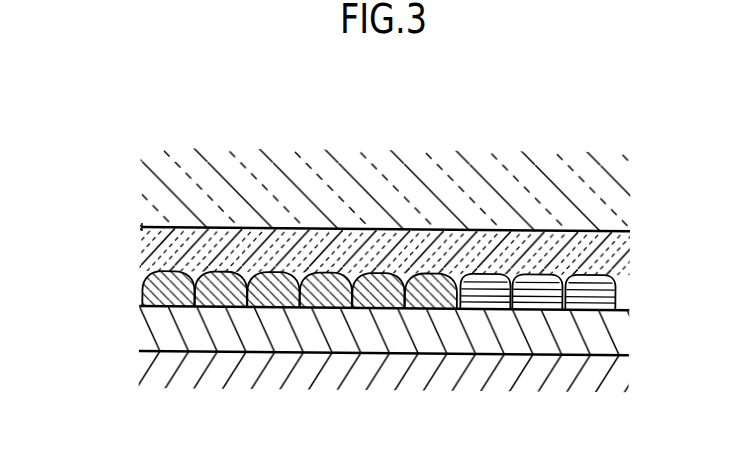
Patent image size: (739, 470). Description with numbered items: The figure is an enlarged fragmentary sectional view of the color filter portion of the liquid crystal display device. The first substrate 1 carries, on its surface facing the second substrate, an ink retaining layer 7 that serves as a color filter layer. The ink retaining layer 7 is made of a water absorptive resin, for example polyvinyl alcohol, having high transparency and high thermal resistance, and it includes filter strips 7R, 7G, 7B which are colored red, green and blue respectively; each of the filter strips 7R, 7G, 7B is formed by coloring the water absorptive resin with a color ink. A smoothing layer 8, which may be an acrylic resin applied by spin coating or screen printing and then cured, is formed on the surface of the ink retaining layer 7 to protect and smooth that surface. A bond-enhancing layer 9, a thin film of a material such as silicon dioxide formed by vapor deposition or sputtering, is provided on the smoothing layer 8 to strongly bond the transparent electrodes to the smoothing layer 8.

The first substrate 1 is at (164, 185).
The ink retaining layer 7 is at (139, 258).
The filter strip 7R is at (277, 283).
The filter strip 7G is at (432, 283).
The filter strip 7B is at (590, 283).
The smoothing layer 8 is at (157, 325).
The bond-enhancing layer 9 is at (163, 371).